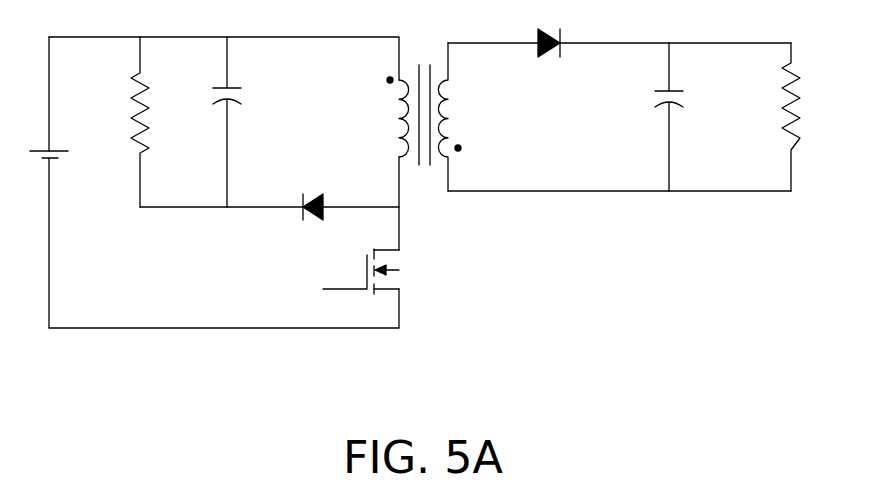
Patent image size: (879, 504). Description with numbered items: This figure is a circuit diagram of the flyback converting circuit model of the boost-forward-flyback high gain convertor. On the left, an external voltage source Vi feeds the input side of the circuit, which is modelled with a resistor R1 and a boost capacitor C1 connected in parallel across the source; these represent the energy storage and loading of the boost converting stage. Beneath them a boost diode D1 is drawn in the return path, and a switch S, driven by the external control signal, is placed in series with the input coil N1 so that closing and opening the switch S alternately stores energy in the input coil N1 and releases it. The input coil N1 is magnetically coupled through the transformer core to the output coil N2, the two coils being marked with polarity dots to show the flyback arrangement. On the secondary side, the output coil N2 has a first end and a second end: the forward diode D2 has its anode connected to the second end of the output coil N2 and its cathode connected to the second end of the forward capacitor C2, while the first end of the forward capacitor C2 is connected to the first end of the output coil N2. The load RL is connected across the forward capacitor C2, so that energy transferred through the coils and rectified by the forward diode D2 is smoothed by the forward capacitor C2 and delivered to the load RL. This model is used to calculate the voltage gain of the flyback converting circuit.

The external voltage source Vi is at (63, 153).
The resistor R1 is at (158, 122).
The boost capacitor C1 is at (247, 122).
The boost diode D1 is at (310, 188).
The input coil N1 is at (391, 115).
The output coil N2 is at (467, 117).
The forward diode D2 is at (552, 64).
The forward capacitor C2 is at (690, 117).
The load RL is at (811, 117).
The switch S is at (361, 271).